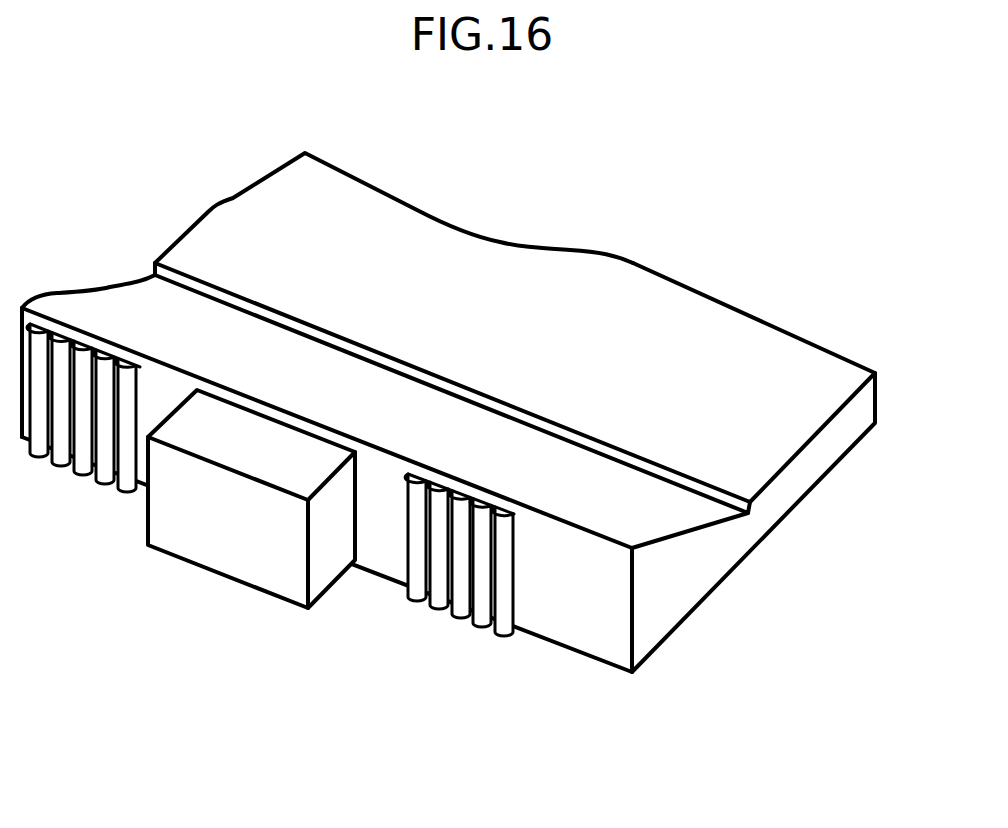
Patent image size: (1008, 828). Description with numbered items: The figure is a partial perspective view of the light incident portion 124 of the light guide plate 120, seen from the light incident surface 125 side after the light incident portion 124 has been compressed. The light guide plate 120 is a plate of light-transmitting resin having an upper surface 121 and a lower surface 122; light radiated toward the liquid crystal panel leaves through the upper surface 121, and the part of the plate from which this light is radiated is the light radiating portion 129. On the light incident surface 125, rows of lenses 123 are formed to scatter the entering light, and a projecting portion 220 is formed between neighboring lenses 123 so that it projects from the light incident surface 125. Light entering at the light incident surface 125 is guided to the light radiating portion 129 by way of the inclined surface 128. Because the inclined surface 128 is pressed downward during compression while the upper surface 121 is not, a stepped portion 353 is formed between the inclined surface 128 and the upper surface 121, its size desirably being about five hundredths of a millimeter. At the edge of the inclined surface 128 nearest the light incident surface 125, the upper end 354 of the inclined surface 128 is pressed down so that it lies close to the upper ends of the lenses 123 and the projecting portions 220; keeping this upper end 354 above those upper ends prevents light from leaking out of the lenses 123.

The light guide plate 120 is at (355, 642).
The upper surface 121 is at (527, 263).
The lower surface 122 is at (830, 477).
The lenses 123 is at (440, 598).
The light incident portion 124 is at (663, 587).
The light incident surface 125 is at (400, 472).
The inclined surface 128 is at (608, 492).
The light radiating portion 129 is at (645, 258).
The projecting portion 220 is at (220, 537).
The stepped portion 353 is at (412, 358).
The upper end of the inclined surface 354 is at (260, 400).